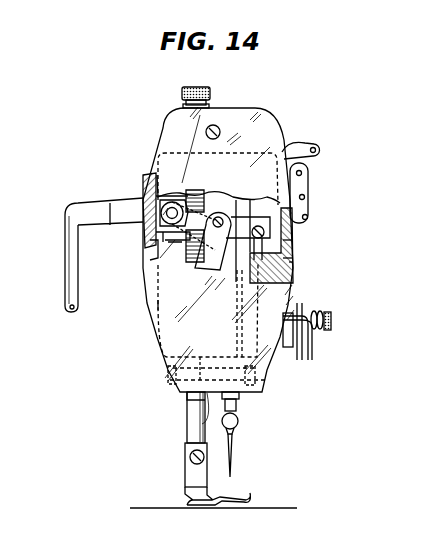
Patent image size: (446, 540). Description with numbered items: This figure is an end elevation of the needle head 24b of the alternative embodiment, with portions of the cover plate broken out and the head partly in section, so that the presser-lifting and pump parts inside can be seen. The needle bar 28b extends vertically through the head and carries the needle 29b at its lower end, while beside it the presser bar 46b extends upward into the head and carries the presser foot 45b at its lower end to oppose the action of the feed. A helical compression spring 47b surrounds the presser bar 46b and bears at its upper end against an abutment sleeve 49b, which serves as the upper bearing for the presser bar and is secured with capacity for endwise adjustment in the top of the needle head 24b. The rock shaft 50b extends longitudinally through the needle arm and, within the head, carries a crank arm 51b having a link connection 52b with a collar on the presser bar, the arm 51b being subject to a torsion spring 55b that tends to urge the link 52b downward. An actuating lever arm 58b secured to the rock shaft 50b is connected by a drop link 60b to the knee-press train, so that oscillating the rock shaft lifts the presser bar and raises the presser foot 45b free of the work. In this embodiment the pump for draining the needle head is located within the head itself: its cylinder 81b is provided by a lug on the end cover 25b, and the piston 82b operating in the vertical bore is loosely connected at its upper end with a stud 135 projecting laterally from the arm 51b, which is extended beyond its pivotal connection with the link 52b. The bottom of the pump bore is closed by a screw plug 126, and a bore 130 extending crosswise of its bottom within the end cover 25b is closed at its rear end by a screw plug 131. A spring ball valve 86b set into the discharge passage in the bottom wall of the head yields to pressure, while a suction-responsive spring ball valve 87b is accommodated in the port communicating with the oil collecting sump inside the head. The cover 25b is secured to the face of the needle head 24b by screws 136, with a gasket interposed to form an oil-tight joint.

The abutment sleeve 49b is at (183, 104).
The screws 136 is at (214, 130).
The torsion spring 55b is at (170, 201).
The rock shaft 50b is at (160, 213).
The crank arm 51b is at (239, 222).
The stud 135 is at (280, 222).
The actuating lever arm 58b is at (107, 215).
The drop link 60b is at (65, 265).
The helical compression spring 47b is at (152, 255).
The pump cylinder 81b is at (284, 243).
The piston 82b is at (284, 259).
The needle head 24b is at (291, 270).
The link connection 52b is at (195, 263).
The end cover 25b is at (173, 307).
The bore 130 is at (214, 352).
The screw plug 131 is at (168, 372).
The spring ball valve 86b is at (265, 374).
The suction responsive spring ball valve 87b is at (185, 399).
The screw plug 126 is at (257, 385).
The presser bar 46b is at (193, 428).
The needle bar 28b is at (238, 405).
The needle 29b is at (236, 449).
The presser foot 45b is at (250, 497).